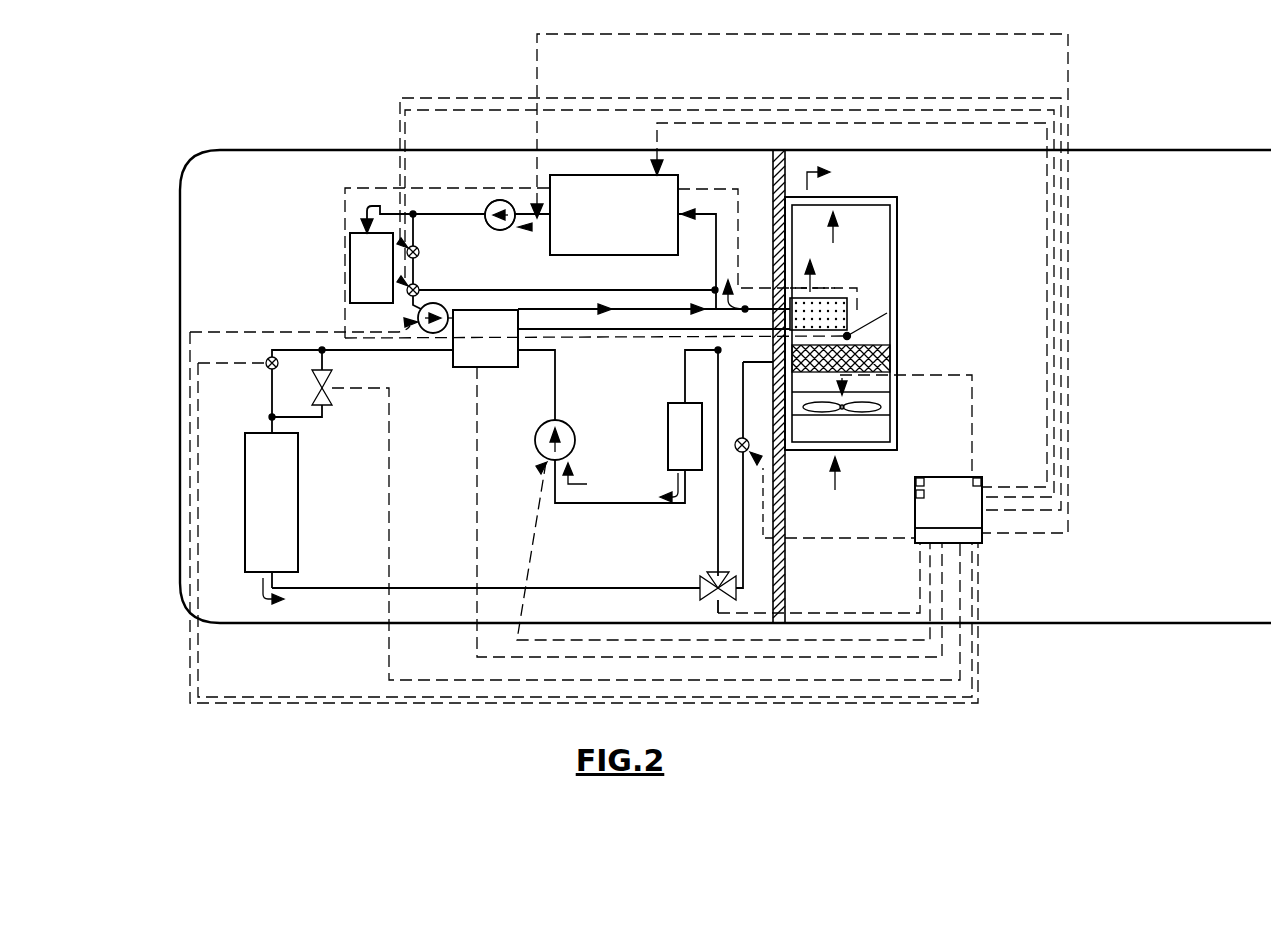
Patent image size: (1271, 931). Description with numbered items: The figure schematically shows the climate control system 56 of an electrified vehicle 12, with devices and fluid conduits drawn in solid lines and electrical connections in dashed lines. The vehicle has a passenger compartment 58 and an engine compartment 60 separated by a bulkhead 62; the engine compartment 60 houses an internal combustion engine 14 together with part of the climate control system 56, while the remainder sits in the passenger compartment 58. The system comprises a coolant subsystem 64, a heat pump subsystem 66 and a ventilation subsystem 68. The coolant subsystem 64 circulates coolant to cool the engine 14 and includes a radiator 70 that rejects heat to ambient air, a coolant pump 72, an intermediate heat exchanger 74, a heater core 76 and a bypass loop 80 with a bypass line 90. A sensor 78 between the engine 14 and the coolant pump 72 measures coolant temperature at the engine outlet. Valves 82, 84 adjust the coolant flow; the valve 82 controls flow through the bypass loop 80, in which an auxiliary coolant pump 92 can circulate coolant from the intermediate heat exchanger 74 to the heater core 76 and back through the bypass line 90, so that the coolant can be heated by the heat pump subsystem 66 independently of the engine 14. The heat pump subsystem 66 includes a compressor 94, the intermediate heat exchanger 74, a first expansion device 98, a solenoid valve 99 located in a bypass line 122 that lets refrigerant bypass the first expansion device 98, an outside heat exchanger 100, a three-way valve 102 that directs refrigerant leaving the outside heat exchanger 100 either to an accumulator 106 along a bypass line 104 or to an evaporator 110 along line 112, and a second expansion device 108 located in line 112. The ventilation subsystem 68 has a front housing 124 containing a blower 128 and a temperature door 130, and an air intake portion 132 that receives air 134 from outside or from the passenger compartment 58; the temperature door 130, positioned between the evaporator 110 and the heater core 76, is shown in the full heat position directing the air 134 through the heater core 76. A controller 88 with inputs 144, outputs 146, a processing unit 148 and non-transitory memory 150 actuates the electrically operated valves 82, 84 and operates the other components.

The electrified vehicle 12 is at (188, 163).
The internal combustion engine 14 is at (614, 215).
The climate control system 56 is at (366, 165).
The passenger compartment 58 is at (605, 497).
The engine compartment 60 is at (584, 452).
The bulkhead 62 is at (787, 587).
The coolant subsystem 64 is at (345, 195).
The heat pump subsystem 66 is at (287, 305).
The ventilation subsystem 68 is at (935, 248).
The radiator 70 is at (350, 258).
The coolant pump 72 is at (497, 230).
The intermediate heat exchanger 74 is at (505, 312).
The heater core 76 is at (843, 287).
The sensor 78 is at (533, 208).
The bypass loop 80 is at (630, 285).
The valve 82 is at (420, 287).
The valve 84 is at (420, 250).
The controller 88 is at (883, 510).
The bypass line 90 is at (562, 289).
The auxiliary coolant pump 92 is at (440, 303).
The compressor 94 is at (540, 425).
The first expansion device 98 is at (266, 370).
The solenoid valve 99 is at (330, 395).
The outside heat exchanger 100 is at (298, 498).
The three-way valve 102 is at (700, 581).
The bypass line 104 is at (715, 372).
The accumulator 106 is at (668, 432).
The second expansion device 108 is at (735, 455).
The evaporator 110 is at (890, 353).
The line 112 is at (740, 410).
The bypass line 122 is at (324, 355).
The front housing 124 is at (897, 445).
The blower 128 is at (892, 403).
The temperature door 130 is at (882, 316).
The air intake portion 132 is at (887, 432).
The air 134 is at (808, 186).
The inputs 144 is at (978, 477).
The outputs 146 is at (970, 535).
The processing unit 148 is at (913, 496).
The non-transitory memory 150 is at (913, 484).